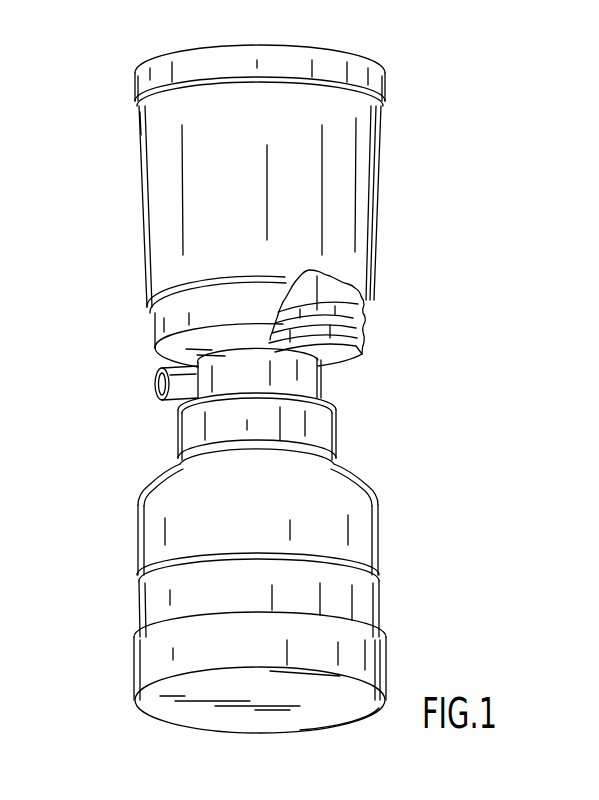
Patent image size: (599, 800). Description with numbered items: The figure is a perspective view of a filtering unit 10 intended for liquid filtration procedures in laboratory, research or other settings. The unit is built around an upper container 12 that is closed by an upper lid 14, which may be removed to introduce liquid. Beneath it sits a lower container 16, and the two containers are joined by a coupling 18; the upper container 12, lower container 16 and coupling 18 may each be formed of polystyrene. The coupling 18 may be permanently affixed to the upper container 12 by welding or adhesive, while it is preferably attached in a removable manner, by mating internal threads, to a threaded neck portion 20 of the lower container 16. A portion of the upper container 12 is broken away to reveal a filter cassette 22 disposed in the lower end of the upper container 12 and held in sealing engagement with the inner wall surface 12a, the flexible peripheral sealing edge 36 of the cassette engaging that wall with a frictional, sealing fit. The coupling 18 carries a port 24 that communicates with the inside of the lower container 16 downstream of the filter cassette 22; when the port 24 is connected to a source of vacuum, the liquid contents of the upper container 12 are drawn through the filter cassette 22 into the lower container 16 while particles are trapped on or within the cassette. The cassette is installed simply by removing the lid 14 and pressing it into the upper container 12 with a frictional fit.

The filtering unit 10 is at (100, 73).
The upper container 12 is at (225, 173).
The inner wall surface 12a is at (356, 317).
The upper lid 14 is at (293, 57).
The lower container 16 is at (234, 517).
The coupling 18 is at (320, 382).
The threaded neck portion 20 is at (233, 455).
The filter cassette 22 is at (353, 334).
The port 24 is at (168, 392).
The peripheral sealing edge 36 is at (318, 318).